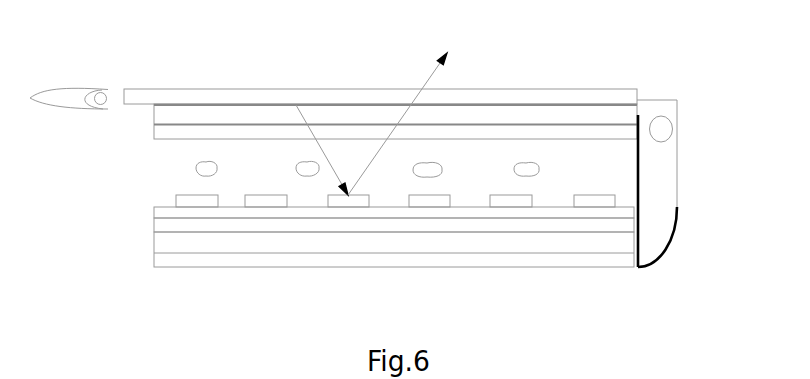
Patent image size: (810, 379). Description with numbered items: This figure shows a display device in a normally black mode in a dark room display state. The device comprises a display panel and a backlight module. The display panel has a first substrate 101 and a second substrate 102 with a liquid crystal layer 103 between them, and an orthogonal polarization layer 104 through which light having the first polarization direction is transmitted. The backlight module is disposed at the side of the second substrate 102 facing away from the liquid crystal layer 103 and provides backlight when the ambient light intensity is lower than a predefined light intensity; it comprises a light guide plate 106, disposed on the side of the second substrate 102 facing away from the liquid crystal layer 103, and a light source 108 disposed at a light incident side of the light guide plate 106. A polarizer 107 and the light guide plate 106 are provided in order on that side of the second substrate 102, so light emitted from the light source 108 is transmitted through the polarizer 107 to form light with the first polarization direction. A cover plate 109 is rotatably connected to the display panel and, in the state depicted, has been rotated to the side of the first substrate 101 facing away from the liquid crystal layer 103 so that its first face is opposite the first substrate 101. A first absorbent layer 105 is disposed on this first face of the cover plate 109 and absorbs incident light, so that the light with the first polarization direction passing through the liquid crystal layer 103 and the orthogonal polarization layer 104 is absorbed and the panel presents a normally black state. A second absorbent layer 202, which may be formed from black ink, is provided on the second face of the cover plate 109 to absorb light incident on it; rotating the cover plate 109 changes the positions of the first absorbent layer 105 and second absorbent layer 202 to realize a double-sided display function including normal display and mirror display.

The first substrate 101 is at (204, 212).
The second substrate 102 is at (210, 132).
The liquid crystal layer 103 is at (173, 168).
The orthogonal polarization layer 104 is at (598, 202).
The first absorbent layer 105 is at (204, 226).
The light guide plate 106 is at (245, 100).
The polarizer 107 is at (349, 116).
The light source 108 is at (100, 92).
The cover plate 109 is at (598, 242).
The second absorbent layer 202 is at (237, 258).